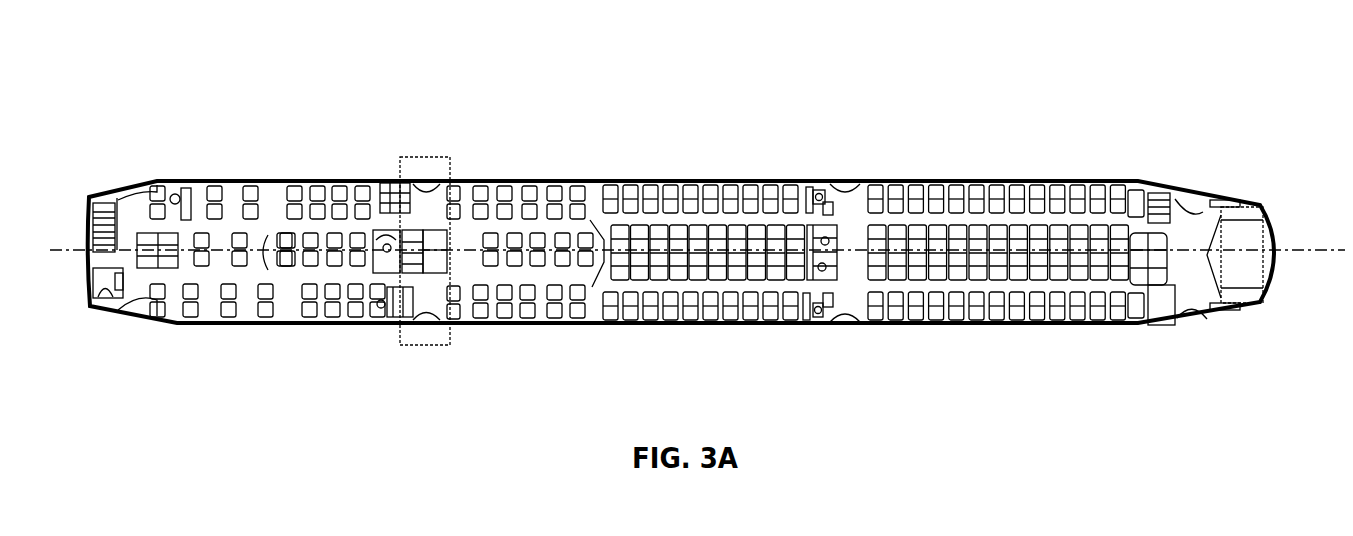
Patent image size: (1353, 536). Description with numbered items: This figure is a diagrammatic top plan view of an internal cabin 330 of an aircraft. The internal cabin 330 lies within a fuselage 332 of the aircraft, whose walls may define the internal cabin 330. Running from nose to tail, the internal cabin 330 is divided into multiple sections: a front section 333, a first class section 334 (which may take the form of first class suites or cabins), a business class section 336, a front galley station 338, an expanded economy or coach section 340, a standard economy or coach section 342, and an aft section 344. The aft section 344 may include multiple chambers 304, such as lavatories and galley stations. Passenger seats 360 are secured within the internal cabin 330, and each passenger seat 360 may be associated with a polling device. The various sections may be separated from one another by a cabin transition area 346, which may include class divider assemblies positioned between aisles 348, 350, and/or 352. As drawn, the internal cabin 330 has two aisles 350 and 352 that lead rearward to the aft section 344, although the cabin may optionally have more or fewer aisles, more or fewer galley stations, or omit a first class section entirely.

The chamber 304 is at (385, 245).
The internal cabin 330 is at (222, 88).
The fuselage 332 is at (545, 110).
The front section 333 is at (147, 333).
The first class section 334 is at (237, 326).
The business class section 336 is at (307, 184).
The front galley station 338 is at (428, 346).
The expanded economy or coach section 340 is at (523, 326).
The standard economy or coach section 342 is at (650, 184).
The aft section 344 is at (1200, 212).
The cabin transition area 346 is at (160, 186).
The aisle 348 is at (378, 195).
The aisle 350 is at (1000, 222).
The aisle 352 is at (1010, 295).
The passenger seat 360 is at (215, 184).